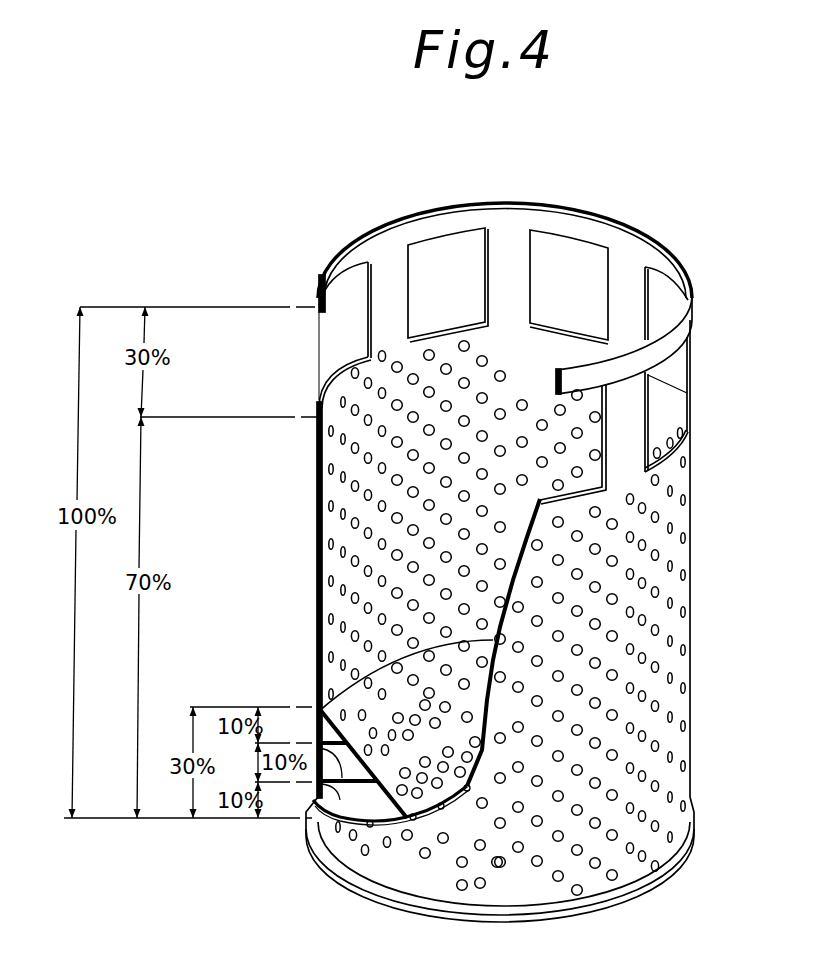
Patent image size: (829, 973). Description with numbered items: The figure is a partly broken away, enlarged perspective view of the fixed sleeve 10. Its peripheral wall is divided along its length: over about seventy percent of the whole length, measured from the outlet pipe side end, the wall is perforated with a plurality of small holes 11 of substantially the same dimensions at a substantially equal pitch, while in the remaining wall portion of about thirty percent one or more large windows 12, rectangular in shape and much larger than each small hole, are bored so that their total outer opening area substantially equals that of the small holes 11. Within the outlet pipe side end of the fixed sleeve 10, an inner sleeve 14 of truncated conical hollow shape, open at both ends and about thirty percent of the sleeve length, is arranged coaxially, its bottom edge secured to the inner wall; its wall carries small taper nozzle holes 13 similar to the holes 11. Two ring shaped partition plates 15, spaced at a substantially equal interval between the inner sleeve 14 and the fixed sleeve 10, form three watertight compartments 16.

The fixed sleeve 10 is at (667, 242).
The small holes 11 is at (367, 383).
The windows 12 is at (350, 287).
The nozzle holes 13 is at (363, 697).
The inner sleeve 14 is at (365, 674).
The ring shaped partition plates 15 is at (316, 796).
The watertight compartments 16 is at (313, 755).